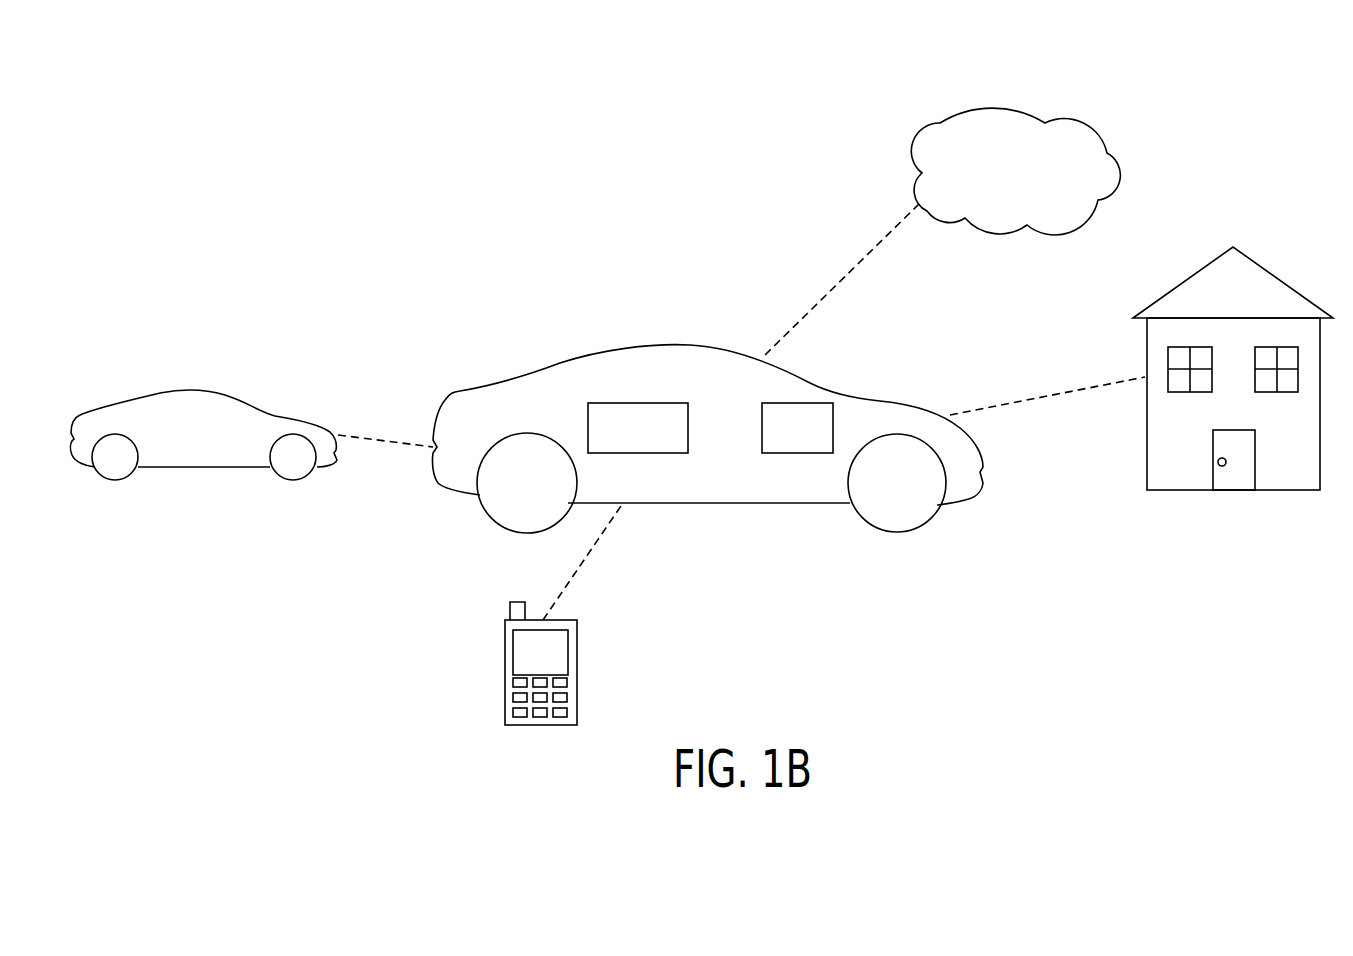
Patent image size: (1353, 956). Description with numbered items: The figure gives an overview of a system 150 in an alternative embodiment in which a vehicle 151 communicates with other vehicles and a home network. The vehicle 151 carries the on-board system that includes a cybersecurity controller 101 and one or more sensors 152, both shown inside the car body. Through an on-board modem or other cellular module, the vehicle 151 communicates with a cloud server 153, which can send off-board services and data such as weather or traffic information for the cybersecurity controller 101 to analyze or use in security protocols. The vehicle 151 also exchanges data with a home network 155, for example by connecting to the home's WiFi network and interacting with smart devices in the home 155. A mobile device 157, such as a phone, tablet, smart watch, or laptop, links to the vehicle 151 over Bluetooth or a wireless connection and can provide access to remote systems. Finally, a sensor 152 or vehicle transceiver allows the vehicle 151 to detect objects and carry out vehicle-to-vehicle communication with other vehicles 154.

The system 150 is at (346, 160).
The vehicle 151 is at (680, 345).
The sensor 152 is at (587, 428).
The cybersecurity controller 101 is at (760, 430).
The cloud server 153 is at (910, 153).
The other vehicles 154 is at (187, 390).
The home network 155 is at (1147, 353).
The mobile device 157 is at (577, 637).